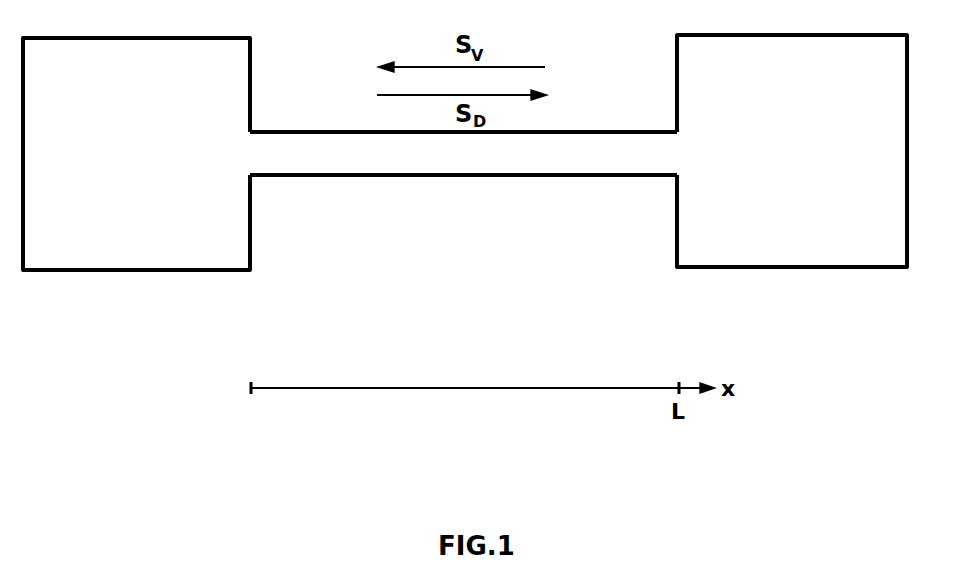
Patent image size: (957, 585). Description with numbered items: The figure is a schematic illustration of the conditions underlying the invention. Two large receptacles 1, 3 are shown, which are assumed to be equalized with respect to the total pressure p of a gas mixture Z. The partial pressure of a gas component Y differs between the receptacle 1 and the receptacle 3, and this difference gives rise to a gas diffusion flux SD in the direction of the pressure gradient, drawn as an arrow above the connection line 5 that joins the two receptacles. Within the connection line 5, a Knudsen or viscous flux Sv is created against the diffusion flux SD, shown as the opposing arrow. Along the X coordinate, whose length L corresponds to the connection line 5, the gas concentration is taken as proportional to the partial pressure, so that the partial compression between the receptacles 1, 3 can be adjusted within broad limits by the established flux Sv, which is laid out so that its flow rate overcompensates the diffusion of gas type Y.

The receptacle 1 is at (133, 272).
The receptacle 3 is at (800, 269).
The connection line 5 is at (470, 177).